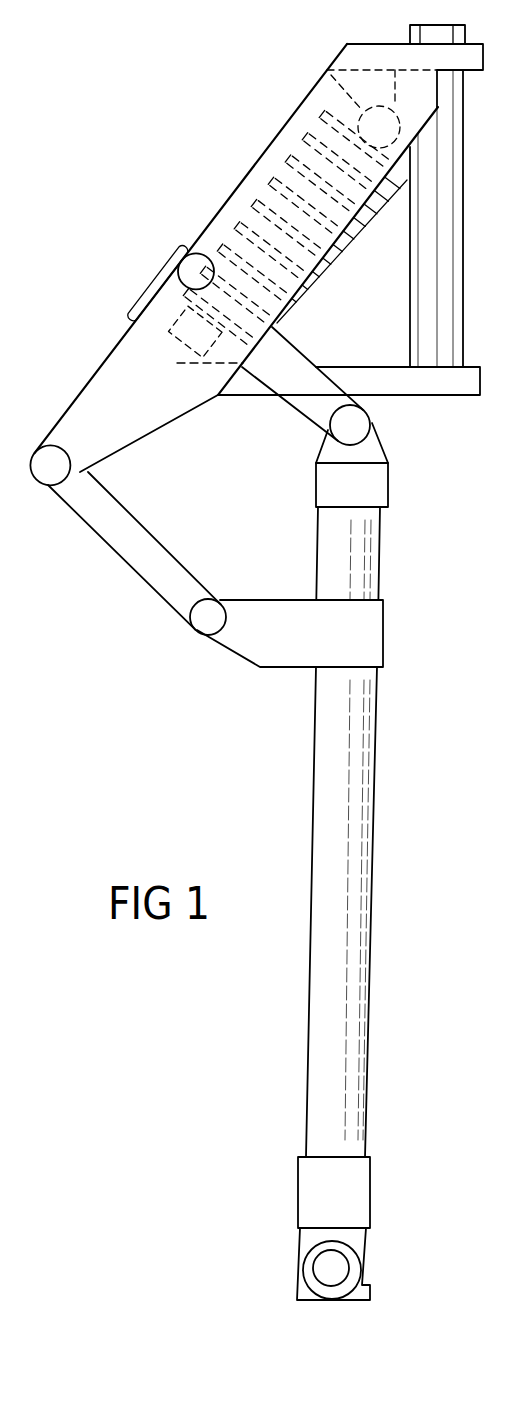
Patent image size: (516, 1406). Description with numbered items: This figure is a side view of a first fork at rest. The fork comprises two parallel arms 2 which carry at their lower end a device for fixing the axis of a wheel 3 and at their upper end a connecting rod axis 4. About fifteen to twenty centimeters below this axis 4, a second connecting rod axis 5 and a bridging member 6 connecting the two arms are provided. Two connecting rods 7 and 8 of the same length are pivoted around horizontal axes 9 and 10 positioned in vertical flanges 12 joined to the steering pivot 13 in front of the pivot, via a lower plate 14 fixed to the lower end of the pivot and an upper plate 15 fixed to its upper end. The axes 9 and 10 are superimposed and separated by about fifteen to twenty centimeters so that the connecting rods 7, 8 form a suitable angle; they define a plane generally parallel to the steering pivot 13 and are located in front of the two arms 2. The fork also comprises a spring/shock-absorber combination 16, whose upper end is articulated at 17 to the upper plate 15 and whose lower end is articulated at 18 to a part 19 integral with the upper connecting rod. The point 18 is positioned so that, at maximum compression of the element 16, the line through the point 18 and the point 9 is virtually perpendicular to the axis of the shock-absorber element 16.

The parallel arms 2 is at (325, 845).
The wheel 3 is at (318, 1267).
The connecting rod axis 4 is at (352, 423).
The second connecting rod axis 5 is at (200, 617).
The bridging member 6 is at (290, 662).
The connecting rod 7 is at (293, 373).
The connecting rod 8 is at (145, 560).
The horizontal axis 9 is at (186, 260).
The horizontal axis 10 is at (62, 471).
The vertical flanges 12 is at (115, 384).
The steering pivot 13 is at (422, 275).
The lower plate 14 is at (418, 383).
The upper plate 15 is at (388, 50).
The spring/shock-absorber combination 16 is at (263, 193).
The upper articulation point 17 is at (377, 128).
The lower articulation point 18 is at (183, 345).
The part integral with the upper connecting rod 19 is at (147, 298).